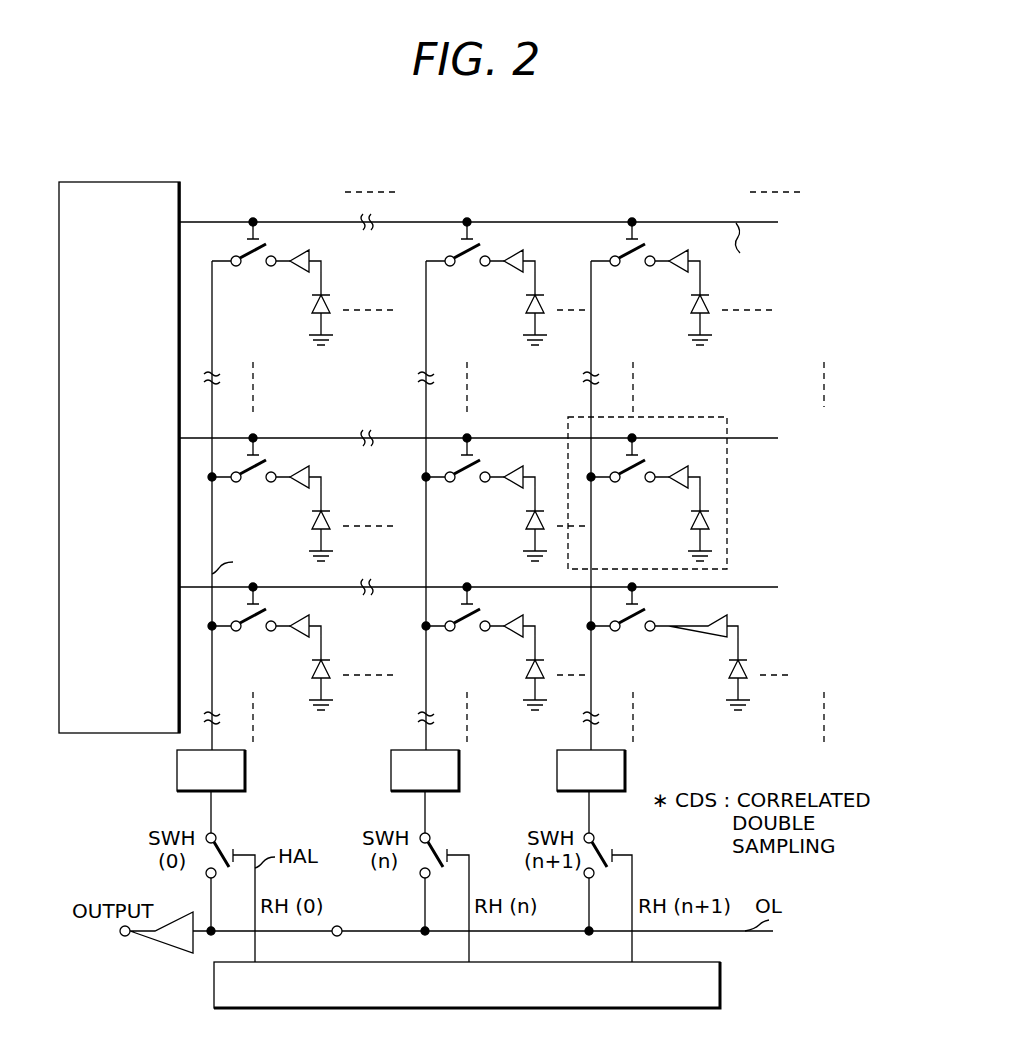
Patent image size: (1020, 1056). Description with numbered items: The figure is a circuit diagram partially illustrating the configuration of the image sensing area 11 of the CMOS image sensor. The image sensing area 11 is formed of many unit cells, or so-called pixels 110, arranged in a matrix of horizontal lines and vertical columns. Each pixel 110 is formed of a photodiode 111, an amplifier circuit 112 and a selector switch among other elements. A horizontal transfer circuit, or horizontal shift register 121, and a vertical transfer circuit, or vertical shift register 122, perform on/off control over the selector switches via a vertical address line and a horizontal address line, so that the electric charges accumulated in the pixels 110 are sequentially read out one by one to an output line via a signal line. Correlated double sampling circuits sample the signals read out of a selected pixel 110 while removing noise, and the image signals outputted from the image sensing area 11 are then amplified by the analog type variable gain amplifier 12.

The image sensing area 11 is at (738, 137).
The analog type variable gain amplifier 12 is at (625, 770).
The pixel 110 is at (683, 474).
The photodiode 111 is at (710, 518).
The amplifier circuit 112 is at (690, 466).
The horizontal transfer circuit (horizontal shift register) 121 is at (720, 989).
The vertical transfer circuit (vertical shift register) 122 is at (120, 184).